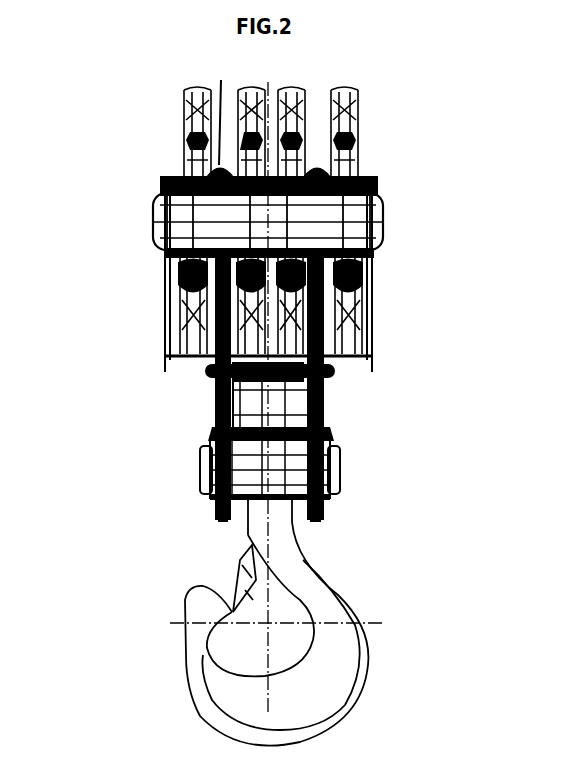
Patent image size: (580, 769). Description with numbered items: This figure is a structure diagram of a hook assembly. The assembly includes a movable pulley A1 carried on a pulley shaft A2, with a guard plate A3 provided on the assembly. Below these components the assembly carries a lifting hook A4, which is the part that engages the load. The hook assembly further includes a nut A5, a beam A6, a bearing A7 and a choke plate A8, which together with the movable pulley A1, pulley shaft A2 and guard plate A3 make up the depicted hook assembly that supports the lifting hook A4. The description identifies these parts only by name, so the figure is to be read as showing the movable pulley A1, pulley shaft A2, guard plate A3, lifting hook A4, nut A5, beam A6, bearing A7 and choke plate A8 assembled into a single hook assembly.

The movable pulley A1 is at (195, 153).
The pulley shaft A2 is at (318, 226).
The guard plate A3 is at (372, 313).
The lifting hook A4 is at (362, 635).
The nut A5 is at (225, 400).
The beam A6 is at (335, 459).
The bearing A7 is at (225, 426).
The choke plate A8 is at (330, 506).